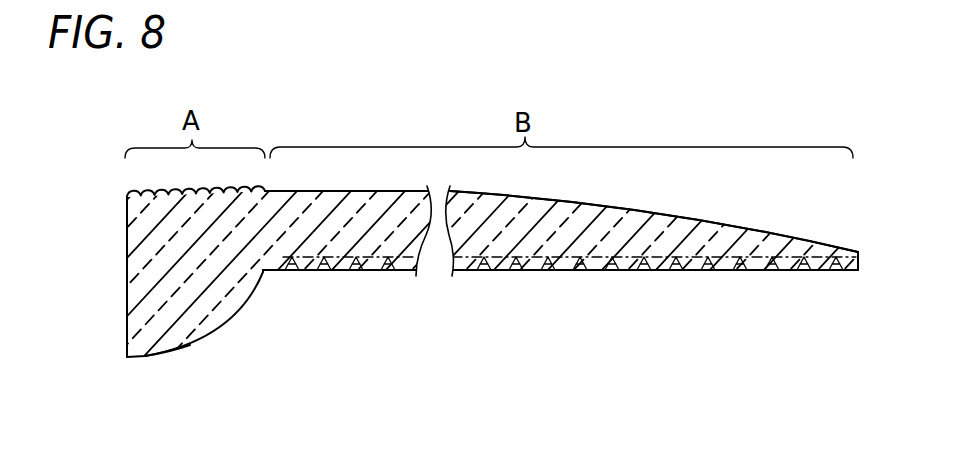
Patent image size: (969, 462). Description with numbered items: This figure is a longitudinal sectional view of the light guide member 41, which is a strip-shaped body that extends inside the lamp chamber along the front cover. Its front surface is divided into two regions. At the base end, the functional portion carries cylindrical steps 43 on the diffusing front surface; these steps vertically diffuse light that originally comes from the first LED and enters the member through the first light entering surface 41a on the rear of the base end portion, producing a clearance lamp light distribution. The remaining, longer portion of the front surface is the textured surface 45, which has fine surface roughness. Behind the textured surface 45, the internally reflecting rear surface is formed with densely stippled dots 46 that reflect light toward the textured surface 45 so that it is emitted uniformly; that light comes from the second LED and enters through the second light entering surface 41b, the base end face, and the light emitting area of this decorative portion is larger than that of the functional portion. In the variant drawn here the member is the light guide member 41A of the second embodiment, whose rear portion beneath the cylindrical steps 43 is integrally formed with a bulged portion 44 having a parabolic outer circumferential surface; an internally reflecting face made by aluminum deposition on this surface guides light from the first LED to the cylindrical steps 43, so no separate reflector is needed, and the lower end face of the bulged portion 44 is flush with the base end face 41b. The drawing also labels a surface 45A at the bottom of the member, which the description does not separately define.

The light guide member 41 is at (592, 192).
The light guide member 41A is at (396, 183).
The first light entering surface 41a is at (127, 319).
The second light entering surface 41b is at (127, 239).
The cylindrical steps 43 is at (148, 191).
The bulged portion 44 is at (218, 309).
The textured surface 45 is at (318, 191).
The bottom surface layer 45A is at (165, 357).
The stippled dots 46 is at (344, 270).